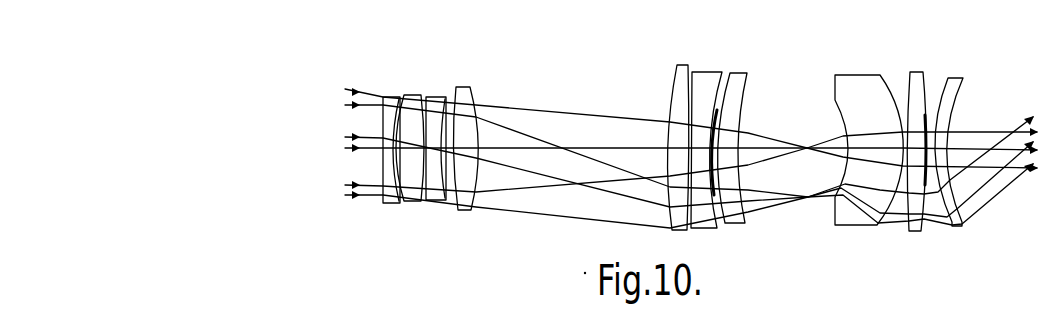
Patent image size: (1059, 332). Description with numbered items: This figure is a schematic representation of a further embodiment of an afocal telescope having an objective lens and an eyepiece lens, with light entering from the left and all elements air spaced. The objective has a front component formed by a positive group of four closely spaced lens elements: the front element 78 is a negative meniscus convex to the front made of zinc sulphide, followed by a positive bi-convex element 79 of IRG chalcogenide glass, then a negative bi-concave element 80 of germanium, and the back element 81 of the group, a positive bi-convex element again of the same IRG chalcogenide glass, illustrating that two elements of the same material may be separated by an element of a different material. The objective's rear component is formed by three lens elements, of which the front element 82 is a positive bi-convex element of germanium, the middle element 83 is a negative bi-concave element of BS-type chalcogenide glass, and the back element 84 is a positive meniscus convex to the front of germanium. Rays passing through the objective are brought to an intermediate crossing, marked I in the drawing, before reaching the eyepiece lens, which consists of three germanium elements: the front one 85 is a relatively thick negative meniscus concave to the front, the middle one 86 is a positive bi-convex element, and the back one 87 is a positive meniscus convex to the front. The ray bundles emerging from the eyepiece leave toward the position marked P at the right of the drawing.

The front element 78 is at (390, 97).
The positive bi-convex element 79 is at (412, 94).
The negative bi-concave element 80 is at (438, 97).
The back element 81 is at (463, 88).
The front element 82 is at (682, 65).
The middle element 83 is at (712, 72).
The back element 84 is at (743, 72).
The front one 85 is at (858, 75).
The middle one 86 is at (918, 72).
The back one 87 is at (958, 78).
The intermediate image plane I is at (808, 240).
The exit pupil P is at (1023, 190).